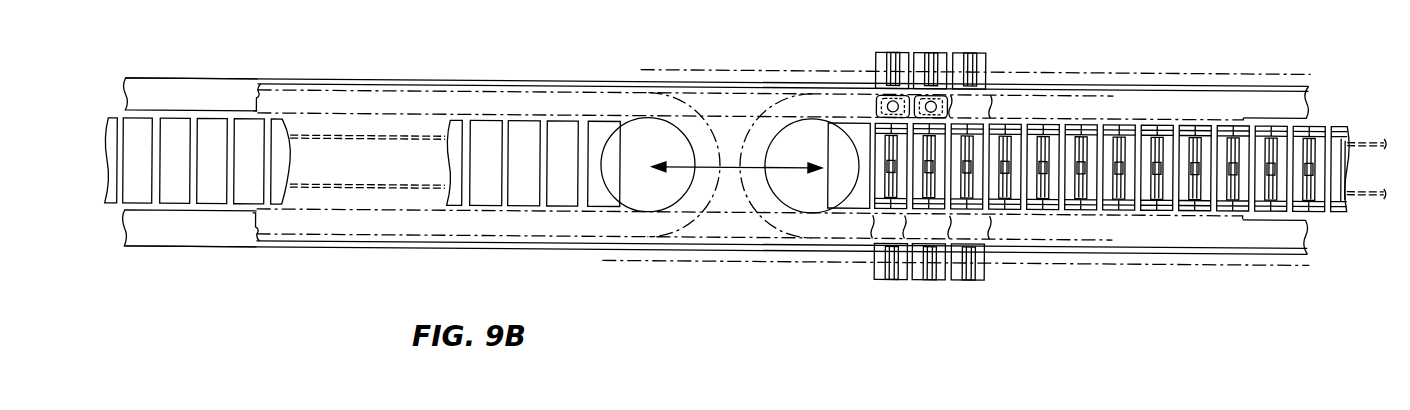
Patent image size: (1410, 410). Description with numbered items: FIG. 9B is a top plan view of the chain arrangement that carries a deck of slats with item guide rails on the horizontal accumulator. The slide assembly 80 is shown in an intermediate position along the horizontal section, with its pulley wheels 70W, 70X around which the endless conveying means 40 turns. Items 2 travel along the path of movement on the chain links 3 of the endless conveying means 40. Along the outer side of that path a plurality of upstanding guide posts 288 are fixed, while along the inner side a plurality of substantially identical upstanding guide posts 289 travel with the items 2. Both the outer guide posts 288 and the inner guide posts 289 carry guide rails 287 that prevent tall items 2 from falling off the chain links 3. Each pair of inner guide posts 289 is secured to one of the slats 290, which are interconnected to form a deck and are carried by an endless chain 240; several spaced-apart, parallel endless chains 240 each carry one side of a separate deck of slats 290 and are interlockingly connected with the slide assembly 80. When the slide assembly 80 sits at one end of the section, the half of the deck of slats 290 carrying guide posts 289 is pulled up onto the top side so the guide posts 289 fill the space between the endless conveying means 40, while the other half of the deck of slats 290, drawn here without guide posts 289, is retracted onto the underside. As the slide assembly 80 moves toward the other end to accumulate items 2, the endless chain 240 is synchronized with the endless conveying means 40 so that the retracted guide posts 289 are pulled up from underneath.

The items 2 is at (925, 88).
The chain links 3 is at (973, 102).
The endless conveying means 40 is at (270, 92).
The pulley wheel 70W is at (628, 128).
The pulley wheel 70X is at (803, 120).
The slide assembly 80 is at (730, 120).
The endless chain 240 is at (374, 133).
The guide rails 287 is at (1307, 125).
The upstanding guide posts 288 is at (975, 47).
The upstanding guide posts 289 is at (873, 118).
The slats 290 is at (527, 125).